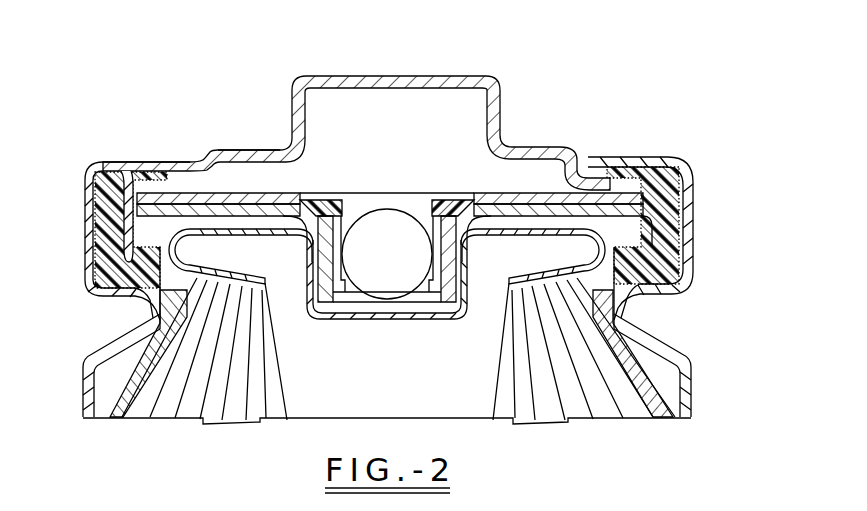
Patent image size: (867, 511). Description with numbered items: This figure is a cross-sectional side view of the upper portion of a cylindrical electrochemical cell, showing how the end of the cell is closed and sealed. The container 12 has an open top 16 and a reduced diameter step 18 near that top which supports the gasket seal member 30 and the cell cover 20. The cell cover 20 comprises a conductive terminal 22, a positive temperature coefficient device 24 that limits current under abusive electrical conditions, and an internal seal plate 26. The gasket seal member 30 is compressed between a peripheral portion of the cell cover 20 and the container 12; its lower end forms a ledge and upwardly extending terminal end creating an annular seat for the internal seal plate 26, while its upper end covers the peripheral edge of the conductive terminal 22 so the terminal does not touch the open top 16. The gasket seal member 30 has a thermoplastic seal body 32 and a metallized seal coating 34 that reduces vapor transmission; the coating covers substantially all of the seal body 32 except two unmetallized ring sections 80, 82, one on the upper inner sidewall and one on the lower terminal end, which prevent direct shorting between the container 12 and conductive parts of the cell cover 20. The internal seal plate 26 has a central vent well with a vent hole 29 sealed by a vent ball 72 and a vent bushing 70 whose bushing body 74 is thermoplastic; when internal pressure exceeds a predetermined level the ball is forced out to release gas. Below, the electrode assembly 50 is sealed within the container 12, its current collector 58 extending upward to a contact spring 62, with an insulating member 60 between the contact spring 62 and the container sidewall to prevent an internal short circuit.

The container 12 is at (84, 255).
The open top 16 is at (630, 162).
The reduced diameter step 18 is at (147, 307).
The cell cover 20 is at (284, 79).
The conductive terminal 22 is at (393, 76).
The positive temperature coefficient (PTC) device 24 is at (533, 192).
The internal seal plate 26 is at (211, 210).
The vent hole 29 is at (361, 303).
The gasket seal member 30 is at (97, 170).
The seal body 32 is at (100, 207).
The seal coating 34 is at (98, 185).
The electrode assembly 50 is at (294, 414).
The current collector 58 is at (501, 360).
The insulating member 60 is at (628, 338).
The contact spring 62 is at (533, 270).
The vent bushing 70 is at (452, 188).
The vent ball 72 is at (401, 210).
The bushing body 74 is at (308, 197).
The unmetallized ring section 80 is at (179, 172).
The unmetallized ring section 82 is at (184, 254).